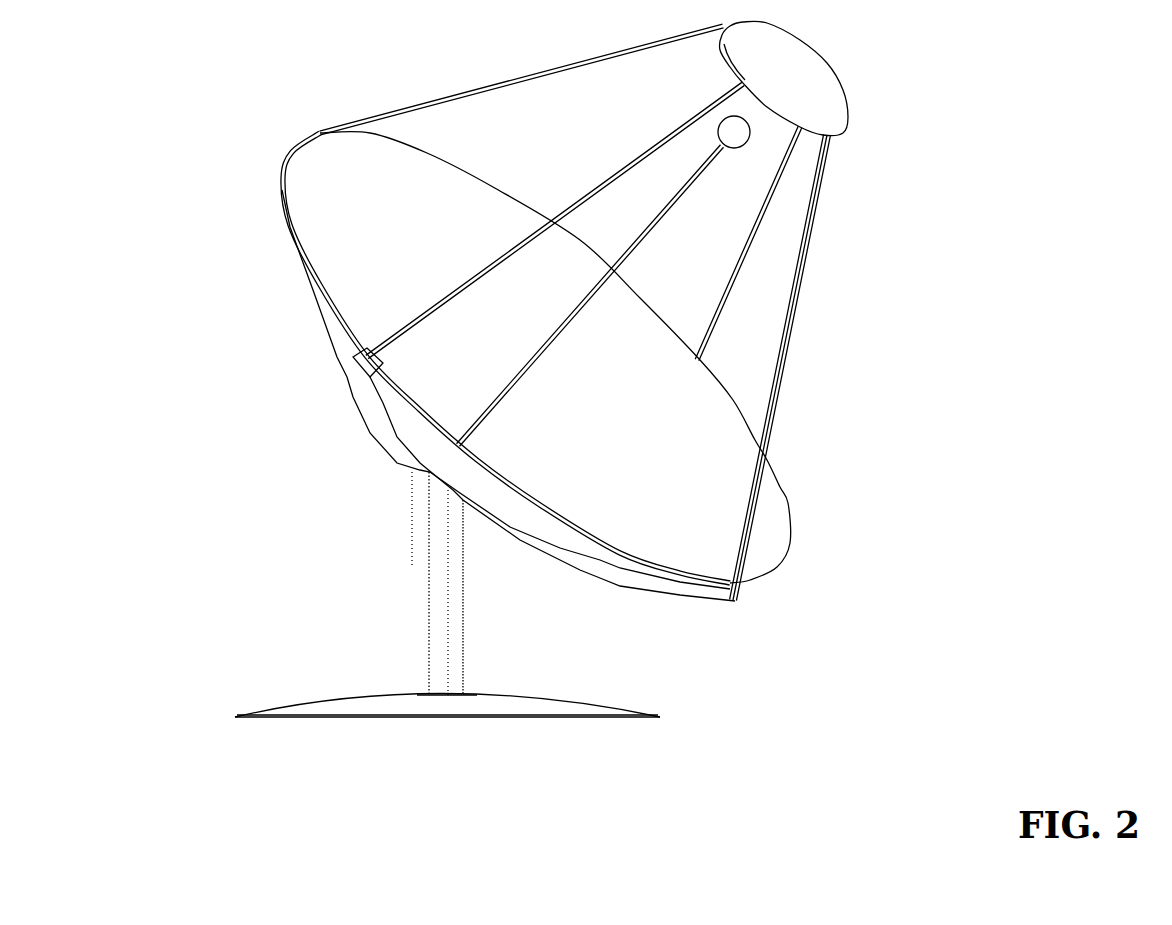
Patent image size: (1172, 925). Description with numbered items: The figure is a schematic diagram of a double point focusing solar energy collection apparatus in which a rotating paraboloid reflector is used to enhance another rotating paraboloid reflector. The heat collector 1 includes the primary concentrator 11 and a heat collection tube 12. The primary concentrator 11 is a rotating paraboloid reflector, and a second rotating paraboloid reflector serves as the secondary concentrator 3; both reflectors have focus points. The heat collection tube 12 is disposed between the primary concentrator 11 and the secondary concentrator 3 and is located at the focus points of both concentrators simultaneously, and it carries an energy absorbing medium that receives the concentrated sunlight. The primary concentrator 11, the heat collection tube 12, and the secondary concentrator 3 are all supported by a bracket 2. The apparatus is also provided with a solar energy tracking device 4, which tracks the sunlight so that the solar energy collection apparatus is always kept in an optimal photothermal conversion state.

The heat collector 1 is at (656, 358).
The primary concentrator 11 is at (788, 503).
The heat collection tube 12 is at (740, 147).
The bracket 2 is at (823, 187).
The secondary concentrator 3 is at (845, 95).
The solar energy tracking device 4 is at (412, 518).